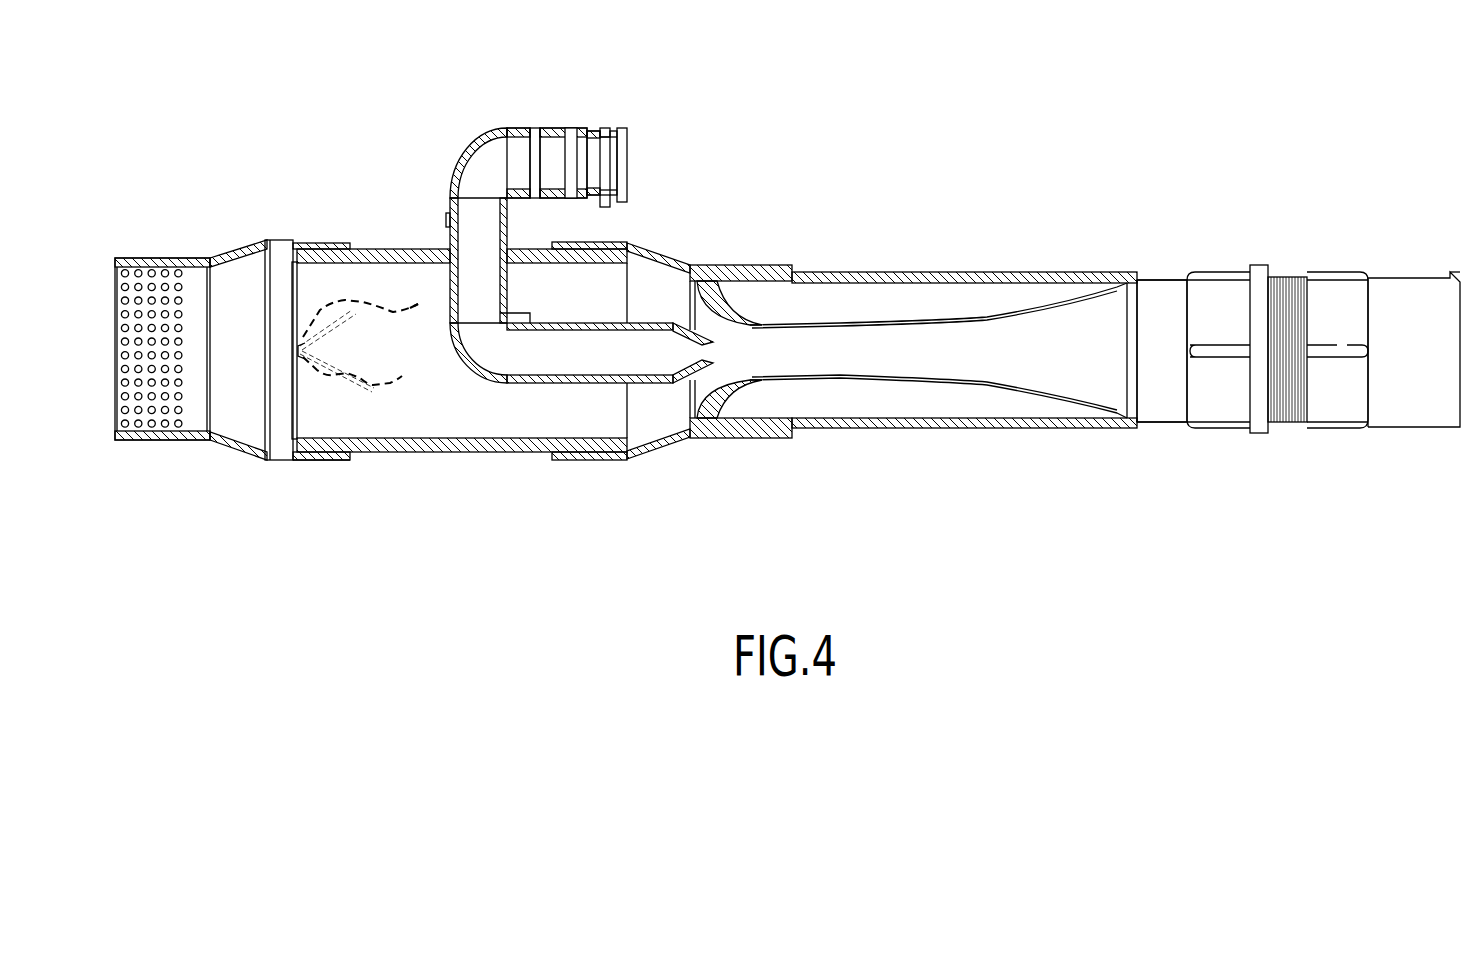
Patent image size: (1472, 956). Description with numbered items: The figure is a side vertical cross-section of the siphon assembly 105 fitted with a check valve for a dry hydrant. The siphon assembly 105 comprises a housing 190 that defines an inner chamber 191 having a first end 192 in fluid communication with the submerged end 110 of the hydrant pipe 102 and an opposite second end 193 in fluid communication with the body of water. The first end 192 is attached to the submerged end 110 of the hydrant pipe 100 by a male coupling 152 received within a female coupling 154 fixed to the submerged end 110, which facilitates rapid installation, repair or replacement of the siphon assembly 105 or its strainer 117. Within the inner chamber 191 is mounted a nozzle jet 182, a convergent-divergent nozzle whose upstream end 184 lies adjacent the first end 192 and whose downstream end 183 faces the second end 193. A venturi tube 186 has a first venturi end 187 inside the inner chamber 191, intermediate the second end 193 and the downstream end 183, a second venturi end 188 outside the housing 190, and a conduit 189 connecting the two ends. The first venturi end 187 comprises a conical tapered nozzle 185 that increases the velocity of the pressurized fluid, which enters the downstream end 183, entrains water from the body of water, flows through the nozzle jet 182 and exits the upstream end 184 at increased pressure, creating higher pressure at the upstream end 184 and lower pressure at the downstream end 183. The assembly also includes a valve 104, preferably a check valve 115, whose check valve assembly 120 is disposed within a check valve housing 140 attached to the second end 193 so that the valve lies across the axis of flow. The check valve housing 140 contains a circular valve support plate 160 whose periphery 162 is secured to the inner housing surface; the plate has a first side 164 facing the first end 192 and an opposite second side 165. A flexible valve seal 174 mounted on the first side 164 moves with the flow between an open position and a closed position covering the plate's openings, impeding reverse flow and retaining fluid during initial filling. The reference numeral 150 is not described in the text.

The hydrant pipe 100 is at (1438, 369).
The hydrant pipe 102 is at (1456, 283).
The valve 104 is at (295, 292).
The siphon assembly 105 is at (470, 530).
The submerged end 110 is at (1417, 410).
The check valve 115 is at (361, 368).
The strainer 117 is at (168, 420).
The check valve assembly 120 is at (283, 428).
The check valve housing 140 is at (280, 260).
The coupling 150 is at (1157, 292).
The male coupling 152 is at (1230, 252).
The female coupling 154 is at (1342, 458).
The valve support plate 160 is at (333, 421).
The periphery 162 is at (293, 289).
The first side 164 is at (307, 458).
The second side 165 is at (297, 375).
The valve seal 174 is at (418, 300).
The nozzle jet 182 is at (867, 323).
The downstream end 183 is at (760, 268).
The upstream end 184 is at (1115, 305).
The conical tapered nozzle 185 is at (695, 362).
The venturi tube 186 is at (463, 143).
The first venturi end 187 is at (643, 352).
The second venturi end 188 is at (603, 128).
The conduit 189 is at (463, 175).
The housing 190 is at (652, 260).
The inner chamber 191 is at (655, 420).
The first end 192 is at (1157, 400).
The second end 193 is at (230, 266).